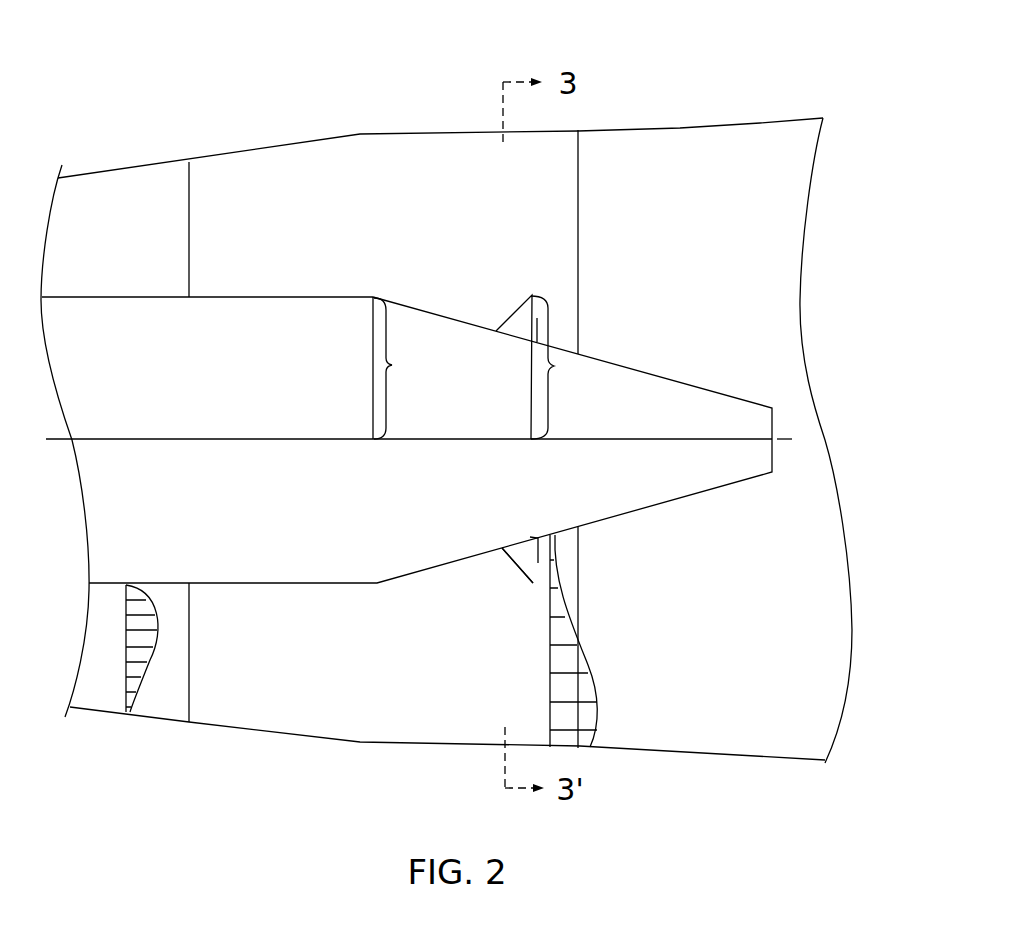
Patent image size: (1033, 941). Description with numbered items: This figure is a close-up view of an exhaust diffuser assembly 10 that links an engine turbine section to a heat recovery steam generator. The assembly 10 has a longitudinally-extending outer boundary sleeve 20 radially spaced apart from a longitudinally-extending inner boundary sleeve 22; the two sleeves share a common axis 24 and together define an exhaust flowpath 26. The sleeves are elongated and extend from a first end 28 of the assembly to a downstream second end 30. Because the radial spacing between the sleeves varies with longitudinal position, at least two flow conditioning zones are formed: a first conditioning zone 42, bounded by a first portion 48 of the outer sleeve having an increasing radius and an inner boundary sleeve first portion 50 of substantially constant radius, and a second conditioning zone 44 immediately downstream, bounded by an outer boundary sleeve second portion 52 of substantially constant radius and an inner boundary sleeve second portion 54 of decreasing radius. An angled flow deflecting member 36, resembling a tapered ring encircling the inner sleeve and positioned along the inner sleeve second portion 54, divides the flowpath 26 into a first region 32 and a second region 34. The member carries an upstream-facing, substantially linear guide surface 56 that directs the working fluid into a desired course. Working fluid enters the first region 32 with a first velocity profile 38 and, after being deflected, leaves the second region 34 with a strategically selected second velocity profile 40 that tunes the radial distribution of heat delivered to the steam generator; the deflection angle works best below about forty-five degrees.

The exhaust diffuser assembly 10 is at (680, 62).
The outer boundary sleeve 20 is at (396, 97).
The inner boundary sleeve 22 is at (311, 243).
The common axis 24 is at (259, 441).
The exhaust flowpath 26 is at (466, 208).
The first end 28 is at (97, 745).
The second end 30 is at (758, 770).
The first region 32 is at (347, 665).
The second region 34 is at (617, 683).
The flow deflecting member 36 is at (522, 310).
The first velocity profile 38 is at (138, 670).
The second velocity profile 40 is at (555, 658).
The first conditioning zone 42 is at (238, 663).
The second conditioning zone 44 is at (443, 607).
The outer boundary sleeve first portion 48 is at (200, 160).
The inner boundary sleeve first portion 50 is at (262, 296).
The outer boundary sleeve second portion 52 is at (580, 131).
The inner boundary sleeve second portion 54 is at (425, 300).
The guide surface 56 is at (524, 582).